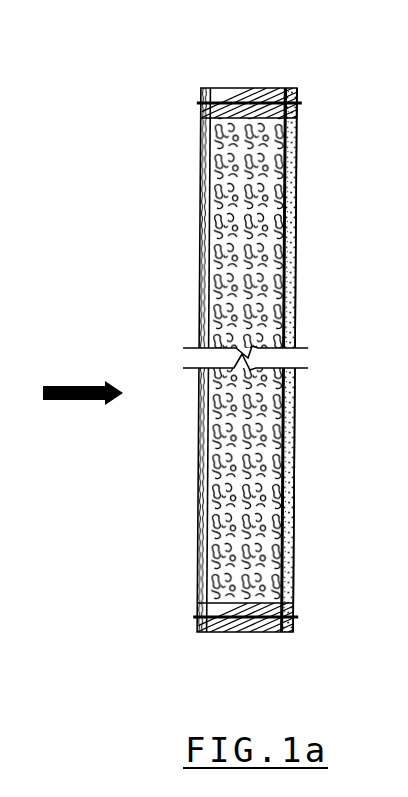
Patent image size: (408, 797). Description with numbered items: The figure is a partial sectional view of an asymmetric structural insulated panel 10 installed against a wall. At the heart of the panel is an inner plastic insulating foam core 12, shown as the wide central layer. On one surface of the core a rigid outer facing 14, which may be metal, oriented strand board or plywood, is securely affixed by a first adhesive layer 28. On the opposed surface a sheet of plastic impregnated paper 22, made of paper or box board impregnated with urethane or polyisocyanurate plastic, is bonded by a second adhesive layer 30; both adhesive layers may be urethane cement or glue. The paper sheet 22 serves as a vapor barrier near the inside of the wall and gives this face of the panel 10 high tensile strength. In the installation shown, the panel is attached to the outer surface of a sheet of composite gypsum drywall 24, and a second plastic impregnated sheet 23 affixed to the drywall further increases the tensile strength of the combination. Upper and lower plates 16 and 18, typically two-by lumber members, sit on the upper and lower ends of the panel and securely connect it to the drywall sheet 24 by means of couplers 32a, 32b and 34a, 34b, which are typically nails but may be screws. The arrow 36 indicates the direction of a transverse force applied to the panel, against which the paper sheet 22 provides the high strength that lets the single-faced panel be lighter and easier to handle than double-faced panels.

The structural insulated panel 10 is at (173, 477).
The plastic insulating foam core 12 is at (220, 534).
The rigid outer facing 14 is at (201, 250).
The upper plate 16 is at (243, 100).
The lower plate 18 is at (243, 625).
The plastic impregnated paper sheet 22 is at (288, 88).
The second plastic impregnated sheet 23 is at (298, 288).
The composite gypsum drywall sheet 24 is at (297, 198).
The first adhesive layer 28 is at (205, 349).
The second adhesive layer 30 is at (268, 349).
The coupler 32a is at (216, 98).
The coupler 32b is at (271, 101).
The coupler 34a is at (224, 628).
The coupler 34b is at (265, 628).
The arrow 36 is at (83, 398).